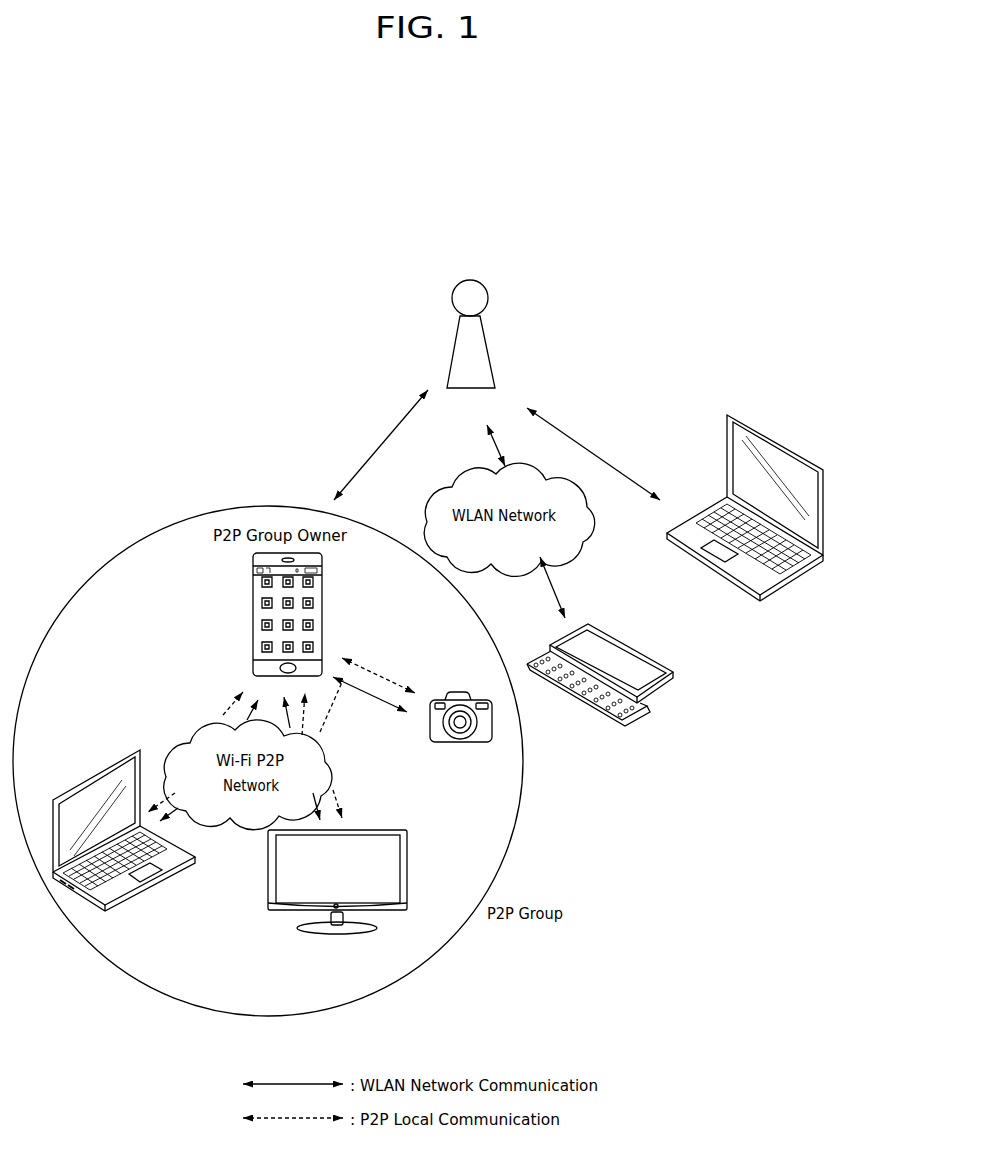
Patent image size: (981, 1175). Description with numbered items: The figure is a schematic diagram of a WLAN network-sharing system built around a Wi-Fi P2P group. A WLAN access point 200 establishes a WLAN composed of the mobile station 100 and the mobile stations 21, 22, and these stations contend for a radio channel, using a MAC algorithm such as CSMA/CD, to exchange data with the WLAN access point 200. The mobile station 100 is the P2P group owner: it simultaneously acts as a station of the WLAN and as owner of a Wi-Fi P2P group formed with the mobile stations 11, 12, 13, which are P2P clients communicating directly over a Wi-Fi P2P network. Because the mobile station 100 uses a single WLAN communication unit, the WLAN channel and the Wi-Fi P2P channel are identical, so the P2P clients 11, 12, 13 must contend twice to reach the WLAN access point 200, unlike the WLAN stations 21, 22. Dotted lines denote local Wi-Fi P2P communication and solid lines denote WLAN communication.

The WLAN access point 200 is at (472, 281).
The mobile station 100 is at (323, 597).
The mobile station 11 is at (95, 775).
The mobile station 12 is at (408, 864).
The mobile station 13 is at (455, 691).
The mobile station 21 is at (638, 650).
The mobile station 22 is at (781, 444).